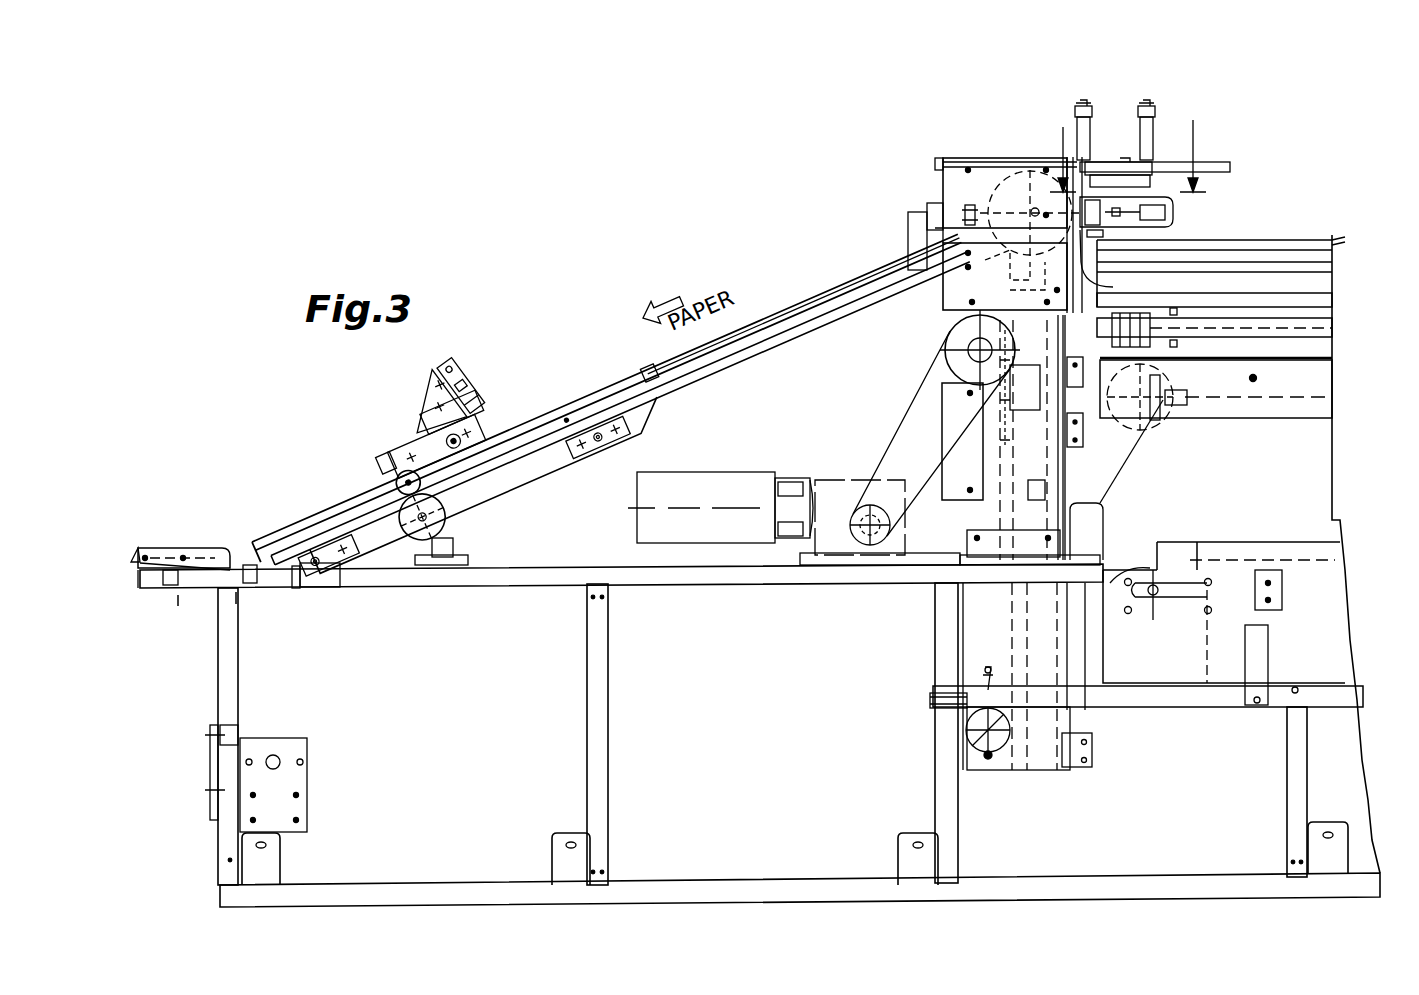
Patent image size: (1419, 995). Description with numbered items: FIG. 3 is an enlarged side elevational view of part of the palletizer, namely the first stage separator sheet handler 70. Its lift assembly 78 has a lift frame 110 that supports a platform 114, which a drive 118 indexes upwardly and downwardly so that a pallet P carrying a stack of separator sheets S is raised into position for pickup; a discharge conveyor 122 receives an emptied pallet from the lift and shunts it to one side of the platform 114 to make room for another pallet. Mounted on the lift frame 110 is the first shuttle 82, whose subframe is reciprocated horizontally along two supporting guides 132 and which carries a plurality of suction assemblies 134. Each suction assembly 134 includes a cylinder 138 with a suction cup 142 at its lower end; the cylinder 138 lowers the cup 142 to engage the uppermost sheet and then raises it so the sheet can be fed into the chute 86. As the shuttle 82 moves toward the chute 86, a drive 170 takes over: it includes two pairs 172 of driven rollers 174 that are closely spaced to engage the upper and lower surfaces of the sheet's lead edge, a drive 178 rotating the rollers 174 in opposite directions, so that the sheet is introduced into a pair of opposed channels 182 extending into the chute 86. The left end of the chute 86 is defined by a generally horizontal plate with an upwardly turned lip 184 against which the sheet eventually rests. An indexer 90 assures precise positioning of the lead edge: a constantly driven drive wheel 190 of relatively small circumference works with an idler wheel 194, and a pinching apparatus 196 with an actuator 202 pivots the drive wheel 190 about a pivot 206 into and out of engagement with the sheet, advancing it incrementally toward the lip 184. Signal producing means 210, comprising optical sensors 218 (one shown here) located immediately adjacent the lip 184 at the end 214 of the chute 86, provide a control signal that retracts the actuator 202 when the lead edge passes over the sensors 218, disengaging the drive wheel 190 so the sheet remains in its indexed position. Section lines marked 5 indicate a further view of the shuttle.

The section line of FIG. 5 is at (1126, 150).
The first stage separator sheet handler 70 is at (932, 281).
The lift assembly 78 is at (1088, 457).
The first shuttle 82 is at (1246, 293).
The chute 86 is at (765, 352).
The indexer 90 is at (422, 405).
The lift frame 110 is at (958, 312).
The platform 114 is at (1272, 405).
The drive 118 is at (833, 464).
The discharge conveyor 122 is at (1325, 328).
The supporting guides 132 is at (1215, 163).
The suction assemblies 134 is at (1140, 106).
The cylinder 138 is at (1080, 108).
The suction cup 142 is at (1168, 226).
The drive 170 is at (993, 187).
The pairs of driven rollers 172 is at (965, 235).
The driven rollers 174 is at (1030, 185).
The drive 178 is at (903, 190).
The opposed channels 182 is at (783, 302).
The upwardly turned lip 184 is at (133, 563).
The drive wheel 190 is at (392, 485).
The idler wheel 194 is at (457, 528).
The pinching apparatus 196 is at (461, 396).
The actuator 202 is at (470, 366).
The pivot 206 is at (495, 422).
The signal producing means 210 is at (193, 522).
The end of the chute 214 is at (143, 577).
The optical sensors 218 is at (140, 582).
The separator sheets S is at (1340, 240).
The pallet P is at (1340, 262).